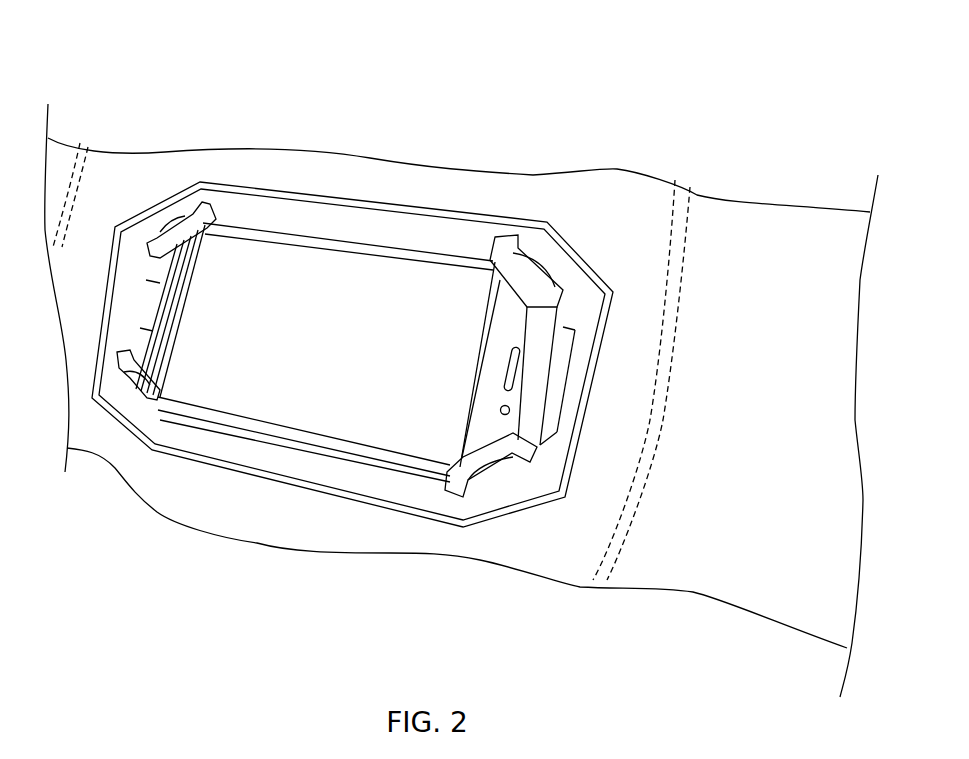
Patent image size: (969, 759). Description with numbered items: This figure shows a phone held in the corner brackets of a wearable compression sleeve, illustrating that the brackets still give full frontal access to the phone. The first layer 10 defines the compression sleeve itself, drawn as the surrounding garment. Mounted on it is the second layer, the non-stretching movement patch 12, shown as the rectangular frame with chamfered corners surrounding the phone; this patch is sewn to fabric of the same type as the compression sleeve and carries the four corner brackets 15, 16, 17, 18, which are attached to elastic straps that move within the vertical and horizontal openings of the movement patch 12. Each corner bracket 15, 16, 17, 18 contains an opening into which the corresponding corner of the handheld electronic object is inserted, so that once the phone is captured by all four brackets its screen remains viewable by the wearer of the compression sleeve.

The first layer 10 is at (163, 177).
The non-stretching movement patch 12 is at (268, 208).
The corner bracket 15 is at (192, 202).
The corner bracket 16 is at (525, 261).
The corner bracket 17 is at (127, 392).
The corner bracket 18 is at (478, 476).